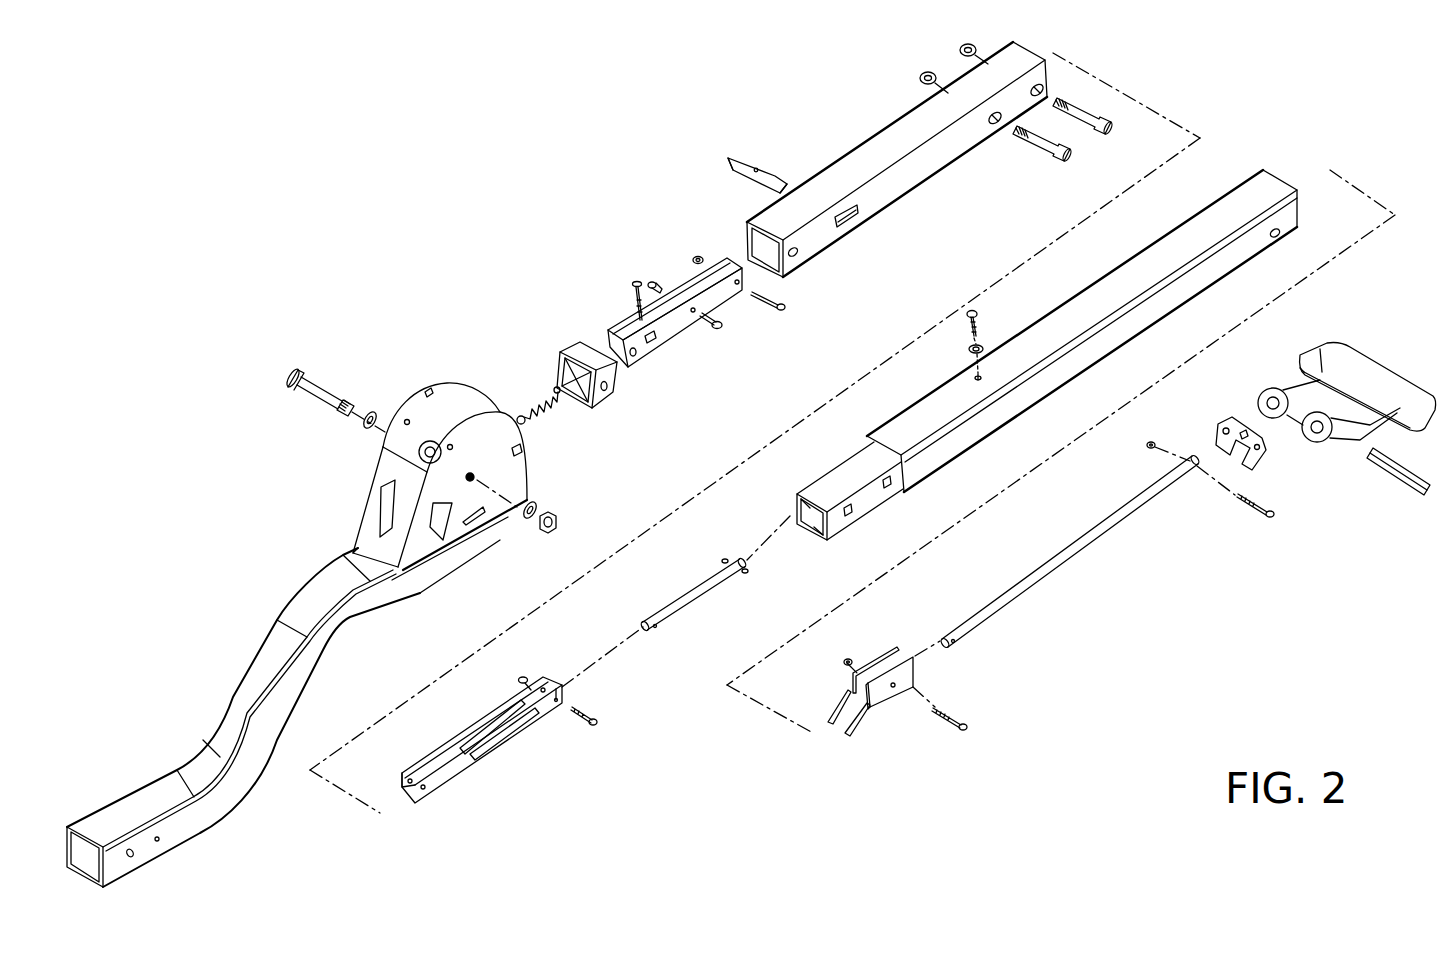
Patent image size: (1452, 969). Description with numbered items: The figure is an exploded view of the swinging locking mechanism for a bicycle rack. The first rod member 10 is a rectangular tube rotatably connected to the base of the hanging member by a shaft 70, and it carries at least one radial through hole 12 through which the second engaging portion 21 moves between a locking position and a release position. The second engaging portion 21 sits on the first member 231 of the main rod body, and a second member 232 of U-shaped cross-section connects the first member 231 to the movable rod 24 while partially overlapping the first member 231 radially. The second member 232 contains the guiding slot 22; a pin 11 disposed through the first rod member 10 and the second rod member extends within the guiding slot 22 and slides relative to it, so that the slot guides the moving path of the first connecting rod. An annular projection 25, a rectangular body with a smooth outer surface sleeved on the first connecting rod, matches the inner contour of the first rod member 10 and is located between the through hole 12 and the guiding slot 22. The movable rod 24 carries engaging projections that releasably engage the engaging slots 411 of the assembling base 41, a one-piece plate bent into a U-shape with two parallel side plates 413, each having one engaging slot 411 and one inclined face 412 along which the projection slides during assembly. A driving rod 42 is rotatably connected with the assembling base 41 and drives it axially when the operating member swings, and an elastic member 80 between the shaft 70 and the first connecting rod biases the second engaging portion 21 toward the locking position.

The first rod member 10 is at (897, 159).
The pin 11 is at (1082, 113).
The through hole 12 is at (847, 215).
The second engaging portion 21 is at (737, 155).
The guiding slot 22 is at (510, 740).
The movable rod 24 is at (668, 613).
The annular projection 25 is at (577, 340).
The assembling base 41 is at (958, 754).
The driving rod 42 is at (1077, 547).
The shaft 70 is at (327, 360).
The elastic member 80 is at (527, 395).
The first member 231 is at (693, 287).
The second member 232 is at (499, 775).
The engaging slot 411 is at (887, 703).
The inclined face 412 is at (850, 715).
The side plate 413 is at (867, 713).